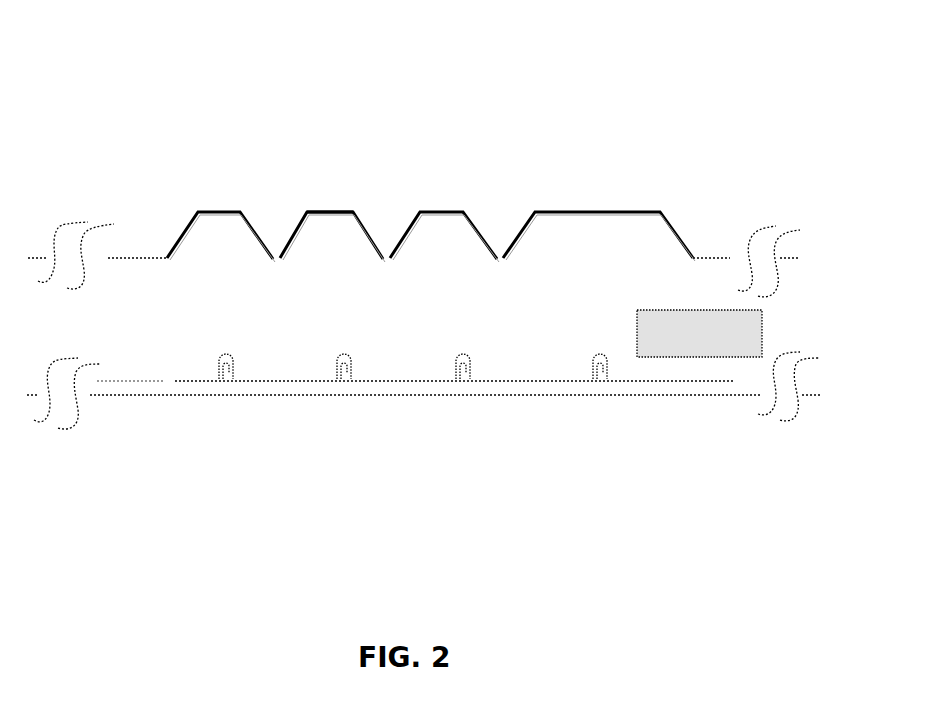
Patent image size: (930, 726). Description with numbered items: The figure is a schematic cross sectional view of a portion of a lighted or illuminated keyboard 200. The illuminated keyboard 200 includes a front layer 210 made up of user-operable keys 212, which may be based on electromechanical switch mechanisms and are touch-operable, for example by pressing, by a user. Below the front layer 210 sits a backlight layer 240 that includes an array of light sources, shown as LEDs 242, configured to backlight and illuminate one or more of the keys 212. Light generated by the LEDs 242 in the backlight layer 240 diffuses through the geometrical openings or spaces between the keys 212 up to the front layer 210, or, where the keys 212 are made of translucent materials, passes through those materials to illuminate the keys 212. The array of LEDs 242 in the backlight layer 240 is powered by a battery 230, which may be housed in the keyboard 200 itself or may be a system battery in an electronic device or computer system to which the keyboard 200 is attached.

The illuminated keyboard 200 is at (136, 38).
The front layer 210 is at (198, 190).
The user-operable keys 212 is at (345, 210).
The battery 230 is at (762, 326).
The backlight layer 240 is at (264, 407).
The LEDs 242 is at (468, 352).